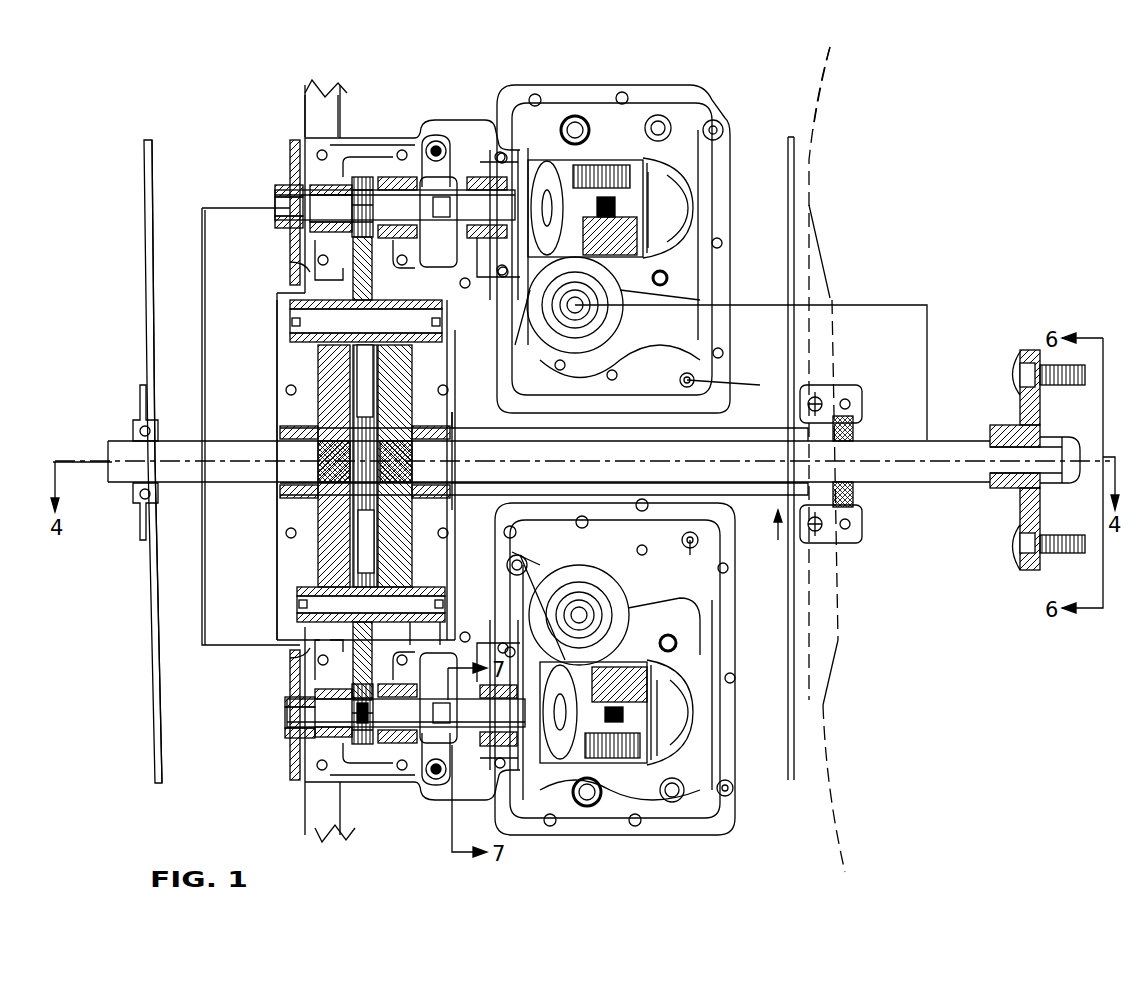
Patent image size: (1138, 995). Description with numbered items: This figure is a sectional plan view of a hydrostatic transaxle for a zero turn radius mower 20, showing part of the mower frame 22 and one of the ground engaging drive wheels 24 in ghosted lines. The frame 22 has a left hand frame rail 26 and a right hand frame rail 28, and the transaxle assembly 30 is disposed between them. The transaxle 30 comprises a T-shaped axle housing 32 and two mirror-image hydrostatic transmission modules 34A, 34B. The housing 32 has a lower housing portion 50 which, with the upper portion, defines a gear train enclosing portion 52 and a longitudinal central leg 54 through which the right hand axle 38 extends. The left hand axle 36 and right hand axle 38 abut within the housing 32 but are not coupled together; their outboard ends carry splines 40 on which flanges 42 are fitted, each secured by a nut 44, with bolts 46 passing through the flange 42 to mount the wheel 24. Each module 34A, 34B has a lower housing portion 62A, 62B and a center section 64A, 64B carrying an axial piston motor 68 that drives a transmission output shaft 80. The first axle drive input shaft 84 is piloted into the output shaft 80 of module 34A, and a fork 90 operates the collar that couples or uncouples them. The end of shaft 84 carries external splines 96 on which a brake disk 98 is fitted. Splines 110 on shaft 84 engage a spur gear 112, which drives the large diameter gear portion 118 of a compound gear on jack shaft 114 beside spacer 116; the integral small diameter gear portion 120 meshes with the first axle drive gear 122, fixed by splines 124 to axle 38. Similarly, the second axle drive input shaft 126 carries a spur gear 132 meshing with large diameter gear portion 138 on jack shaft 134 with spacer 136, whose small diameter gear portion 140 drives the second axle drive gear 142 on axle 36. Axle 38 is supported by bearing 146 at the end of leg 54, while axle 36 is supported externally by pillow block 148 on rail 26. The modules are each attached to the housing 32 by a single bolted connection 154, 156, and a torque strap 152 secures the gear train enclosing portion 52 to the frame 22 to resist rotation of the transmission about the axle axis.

The zero turn radius mower 20 is at (92, 125).
The frame 22 is at (144, 168).
The ground engaging drive wheels 24 is at (822, 65).
The left hand frame rail 26 is at (145, 212).
The right hand frame rail 28 is at (790, 140).
The transaxle assembly 30 is at (228, 130).
The T-shaped axle housing 32 is at (352, 137).
The hydrostatic transmission module 34A is at (705, 192).
The hydrostatic transmission module 34B is at (712, 720).
The left hand axle 36 is at (244, 458).
The right hand axle 38 is at (910, 480).
The splines 40 is at (1005, 500).
The flange 42 is at (1030, 505).
The nut 44 is at (1062, 436).
The bolts 46 is at (1055, 380).
The lower housing portion 50 is at (398, 138).
The gear train enclosing portion 52 is at (298, 648).
The longitudinal central leg 54 is at (622, 482).
The lower housing portion 62A is at (680, 85).
The lower housing portion 62B is at (718, 820).
The center section 64A is at (628, 300).
The center section 64B is at (630, 598).
The axial piston motor 68 is at (655, 230).
The transmission output shaft 80 is at (516, 147).
The first axle drive input shaft 84 is at (325, 185).
The fork 90 is at (450, 158).
The external splines 96 is at (278, 236).
The brake disk 98 is at (290, 170).
The splines 110 is at (352, 268).
The spur gear 112 is at (380, 168).
The jack shaft 114 is at (285, 333).
The spacer 116 is at (330, 285).
The large diameter gear portion 118 is at (366, 323).
The small diameter gear portion 120 is at (412, 272).
The first axle drive gear 122 is at (410, 370).
The splines 124 is at (415, 445).
The second axle drive input shaft 126 is at (350, 728).
The spur gear 132 is at (378, 745).
The jack shaft 134 is at (297, 596).
The spacer 136 is at (437, 639).
The large diameter gear portion 138 is at (352, 688).
The small diameter gear portion 140 is at (305, 632).
The second axle drive gear 142 is at (318, 548).
The bearing 146 is at (855, 415).
The pillow block 148 is at (138, 412).
The torque strap 152 is at (347, 93).
The bolted connection 154 is at (700, 380).
The bolted connection 156 is at (700, 538).